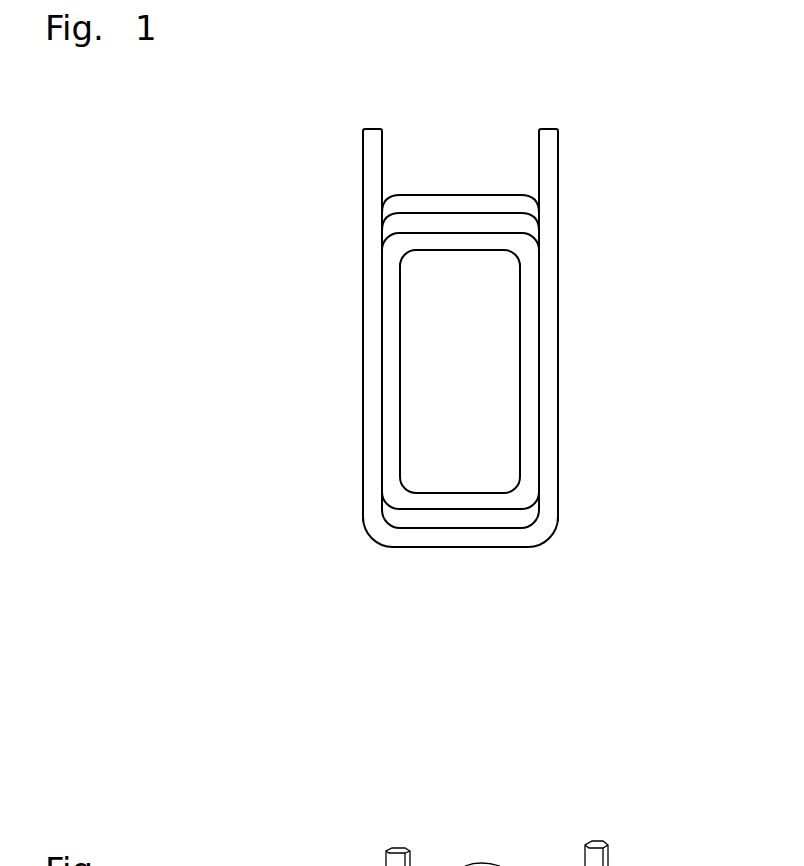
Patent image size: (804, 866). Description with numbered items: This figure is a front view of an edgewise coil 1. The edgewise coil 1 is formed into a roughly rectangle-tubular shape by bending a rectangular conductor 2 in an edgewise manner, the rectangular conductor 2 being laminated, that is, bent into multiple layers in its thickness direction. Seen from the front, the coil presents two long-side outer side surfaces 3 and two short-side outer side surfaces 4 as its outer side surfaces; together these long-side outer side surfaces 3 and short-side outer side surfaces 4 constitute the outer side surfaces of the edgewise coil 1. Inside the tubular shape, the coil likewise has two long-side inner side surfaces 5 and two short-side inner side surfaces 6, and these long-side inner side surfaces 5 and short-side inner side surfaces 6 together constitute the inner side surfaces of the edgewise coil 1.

The edgewise coil 1 is at (638, 47).
The rectangular conductor 2 is at (558, 150).
The long-side outer side surface 3 is at (363, 384).
The short-side outer side surface 4 is at (456, 195).
The long-side inner side surface 5 is at (400, 389).
The short-side inner side surface 6 is at (456, 250).